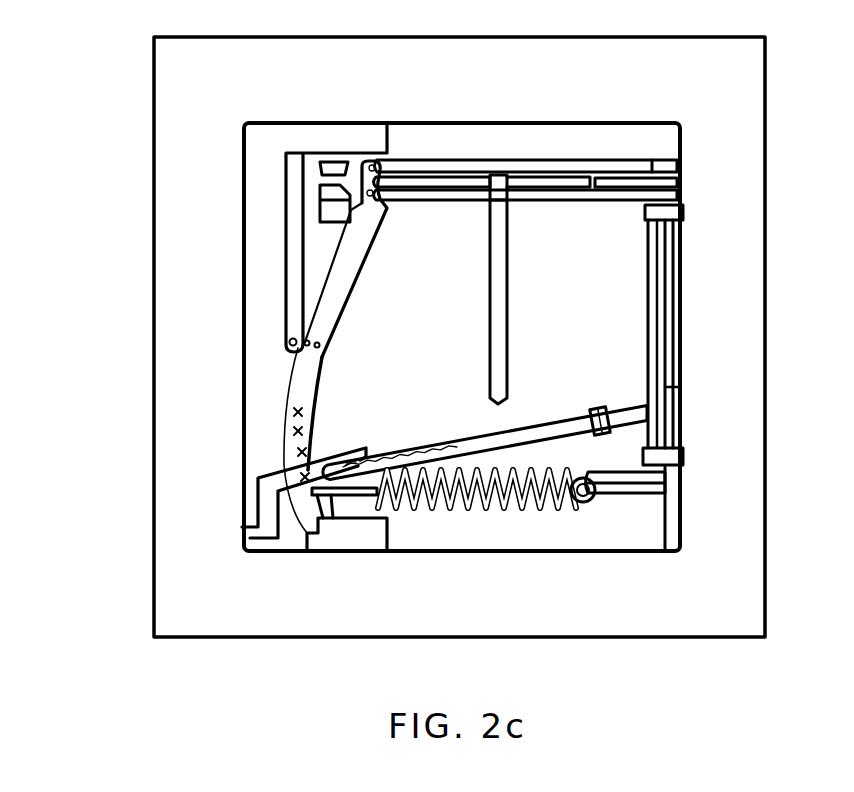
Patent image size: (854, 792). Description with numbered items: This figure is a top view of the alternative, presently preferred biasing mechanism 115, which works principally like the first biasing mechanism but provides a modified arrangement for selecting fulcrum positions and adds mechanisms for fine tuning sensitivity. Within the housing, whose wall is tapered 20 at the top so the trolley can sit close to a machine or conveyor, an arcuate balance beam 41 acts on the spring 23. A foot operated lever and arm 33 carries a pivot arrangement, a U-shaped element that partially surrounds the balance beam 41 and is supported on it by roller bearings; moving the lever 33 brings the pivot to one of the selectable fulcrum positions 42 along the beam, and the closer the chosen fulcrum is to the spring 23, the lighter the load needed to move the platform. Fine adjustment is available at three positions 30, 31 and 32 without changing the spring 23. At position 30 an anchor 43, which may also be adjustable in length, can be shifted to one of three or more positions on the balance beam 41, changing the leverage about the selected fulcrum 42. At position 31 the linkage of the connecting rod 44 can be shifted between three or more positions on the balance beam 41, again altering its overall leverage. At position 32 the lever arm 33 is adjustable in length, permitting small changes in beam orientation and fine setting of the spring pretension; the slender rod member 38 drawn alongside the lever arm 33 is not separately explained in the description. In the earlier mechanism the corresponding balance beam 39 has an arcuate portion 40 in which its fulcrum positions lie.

The biasing mechanism 115 is at (119, 160).
The tapered wall portion 20 is at (735, 538).
The spring 23 is at (430, 510).
The adjustment position 30 is at (304, 345).
The adjustment position 31 is at (390, 152).
The adjustment position 32 is at (612, 434).
The foot operated lever and arm 33 is at (252, 535).
The actuating rod 38 is at (425, 440).
The balance beam 39 is at (298, 382).
The arcuate portion 40 is at (325, 493).
The balance beam 41 is at (462, 337).
The fulcrum positions 42 is at (308, 477).
The anchor 43 is at (302, 228).
The connecting rod 44 is at (557, 183).